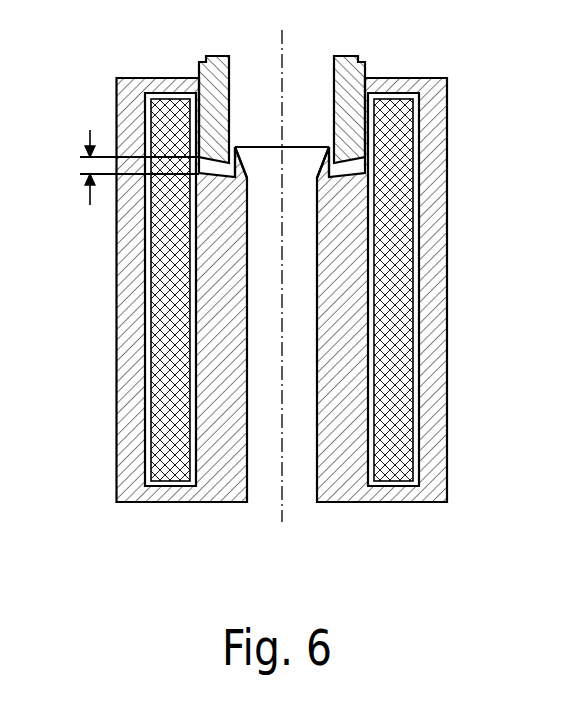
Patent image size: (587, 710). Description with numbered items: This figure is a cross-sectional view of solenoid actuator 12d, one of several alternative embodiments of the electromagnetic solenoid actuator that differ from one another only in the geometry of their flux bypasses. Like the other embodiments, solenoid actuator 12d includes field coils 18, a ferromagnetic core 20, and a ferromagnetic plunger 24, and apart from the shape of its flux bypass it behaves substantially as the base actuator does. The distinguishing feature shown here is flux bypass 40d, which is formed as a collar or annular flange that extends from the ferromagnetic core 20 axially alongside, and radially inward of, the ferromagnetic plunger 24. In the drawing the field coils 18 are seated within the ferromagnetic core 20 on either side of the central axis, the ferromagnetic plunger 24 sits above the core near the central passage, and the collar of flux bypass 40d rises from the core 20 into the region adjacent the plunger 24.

The solenoid actuator 12d is at (483, 75).
The ferromagnetic core 20 is at (135, 297).
The field coils 18 is at (172, 392).
The ferromagnetic plunger 24 is at (200, 70).
The flux bypass 40d is at (330, 167).